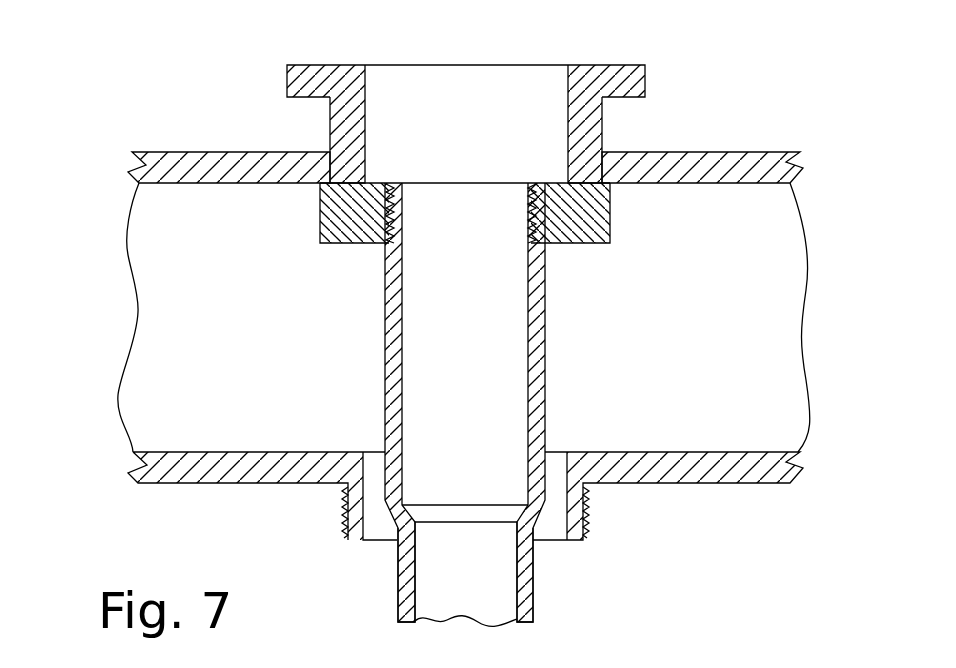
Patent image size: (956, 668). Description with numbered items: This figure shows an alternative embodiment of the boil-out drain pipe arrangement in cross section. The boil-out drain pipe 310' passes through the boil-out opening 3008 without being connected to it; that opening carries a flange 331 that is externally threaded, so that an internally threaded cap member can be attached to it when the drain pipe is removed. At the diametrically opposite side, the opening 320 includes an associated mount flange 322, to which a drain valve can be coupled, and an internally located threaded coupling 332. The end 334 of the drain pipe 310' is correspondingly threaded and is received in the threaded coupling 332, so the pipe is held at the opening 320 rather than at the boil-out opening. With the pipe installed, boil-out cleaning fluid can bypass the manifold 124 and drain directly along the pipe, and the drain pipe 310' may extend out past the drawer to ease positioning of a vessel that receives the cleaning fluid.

The manifold 124 is at (200, 152).
The opening 320 is at (480, 183).
The mount flange 322 is at (603, 128).
The threaded coupling 332 is at (612, 213).
The end of the drain pipe 334 is at (400, 200).
The body 3008 is at (555, 448).
The flange 331 is at (586, 515).
The boil-out drain pipe 310' is at (561, 578).